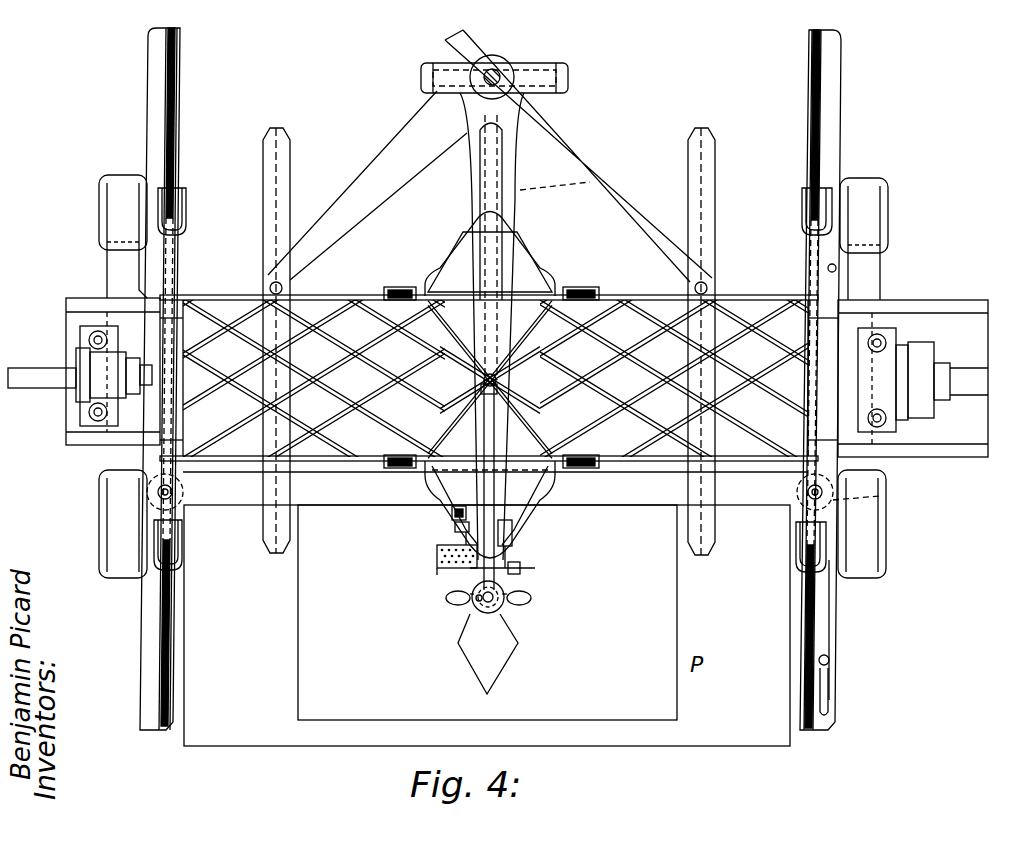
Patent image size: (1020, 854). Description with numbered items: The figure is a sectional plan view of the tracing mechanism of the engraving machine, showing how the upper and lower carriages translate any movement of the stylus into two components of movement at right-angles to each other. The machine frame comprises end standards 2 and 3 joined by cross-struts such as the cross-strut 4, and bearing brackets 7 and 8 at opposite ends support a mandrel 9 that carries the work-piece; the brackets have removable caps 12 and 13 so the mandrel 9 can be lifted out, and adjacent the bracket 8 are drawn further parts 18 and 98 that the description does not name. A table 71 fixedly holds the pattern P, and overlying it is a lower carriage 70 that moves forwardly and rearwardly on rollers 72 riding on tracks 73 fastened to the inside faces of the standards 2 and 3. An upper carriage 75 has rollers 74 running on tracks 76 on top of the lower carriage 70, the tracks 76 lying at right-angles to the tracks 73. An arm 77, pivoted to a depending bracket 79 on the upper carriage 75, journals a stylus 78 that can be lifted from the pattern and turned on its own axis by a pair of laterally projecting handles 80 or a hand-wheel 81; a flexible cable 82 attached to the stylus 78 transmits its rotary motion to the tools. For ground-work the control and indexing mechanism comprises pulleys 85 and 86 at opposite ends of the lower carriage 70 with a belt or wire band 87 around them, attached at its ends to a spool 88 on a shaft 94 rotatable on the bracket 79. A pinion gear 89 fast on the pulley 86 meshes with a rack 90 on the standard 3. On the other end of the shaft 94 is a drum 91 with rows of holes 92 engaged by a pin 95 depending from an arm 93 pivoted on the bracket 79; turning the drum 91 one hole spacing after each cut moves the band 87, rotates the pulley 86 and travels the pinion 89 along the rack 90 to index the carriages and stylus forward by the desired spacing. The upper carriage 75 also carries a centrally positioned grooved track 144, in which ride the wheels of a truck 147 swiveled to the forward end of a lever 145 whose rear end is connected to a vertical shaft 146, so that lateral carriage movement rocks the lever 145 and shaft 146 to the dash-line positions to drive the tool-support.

The end standard 2 is at (108, 270).
The end standard 3 is at (866, 546).
The cross-strut 4 is at (82, 440).
The bearing bracket 7 is at (82, 420).
The bearing bracket 8 is at (892, 420).
The mandrel 9 is at (46, 376).
The removable cap 12 is at (84, 400).
The removable cap 13 is at (890, 352).
The pulley 18 is at (926, 346).
The carriage 70 is at (322, 462).
The table 71 is at (296, 746).
The rollers 72 is at (176, 186).
The tracks 73 is at (172, 80).
The rollers 74 is at (396, 288).
The carriage 75 is at (548, 270).
The tracks 76 is at (730, 294).
The arm 77 is at (520, 570).
The stylus 78 is at (480, 608).
The depending bracket 79 is at (480, 500).
The handles 80 is at (452, 604).
The hand-wheel 81 is at (498, 610).
The flexible cable 82 is at (470, 630).
The pulley 85 is at (172, 492).
The pulley 86 is at (822, 490).
The belt or wire band 87 is at (640, 482).
The spool 88 is at (450, 514).
The pinion gear 89 is at (865, 500).
The rack 90 is at (830, 606).
The drum 91 is at (455, 540).
The holes 92 is at (437, 556).
The arm 93 is at (440, 572).
The shaft 94 is at (455, 528).
The pin 95 is at (474, 598).
The shaft 98 is at (930, 420).
The grooved track 144 is at (276, 553).
The lever 145 is at (418, 185).
The vertical shaft 146 is at (500, 68).
The truck 147 is at (446, 405).